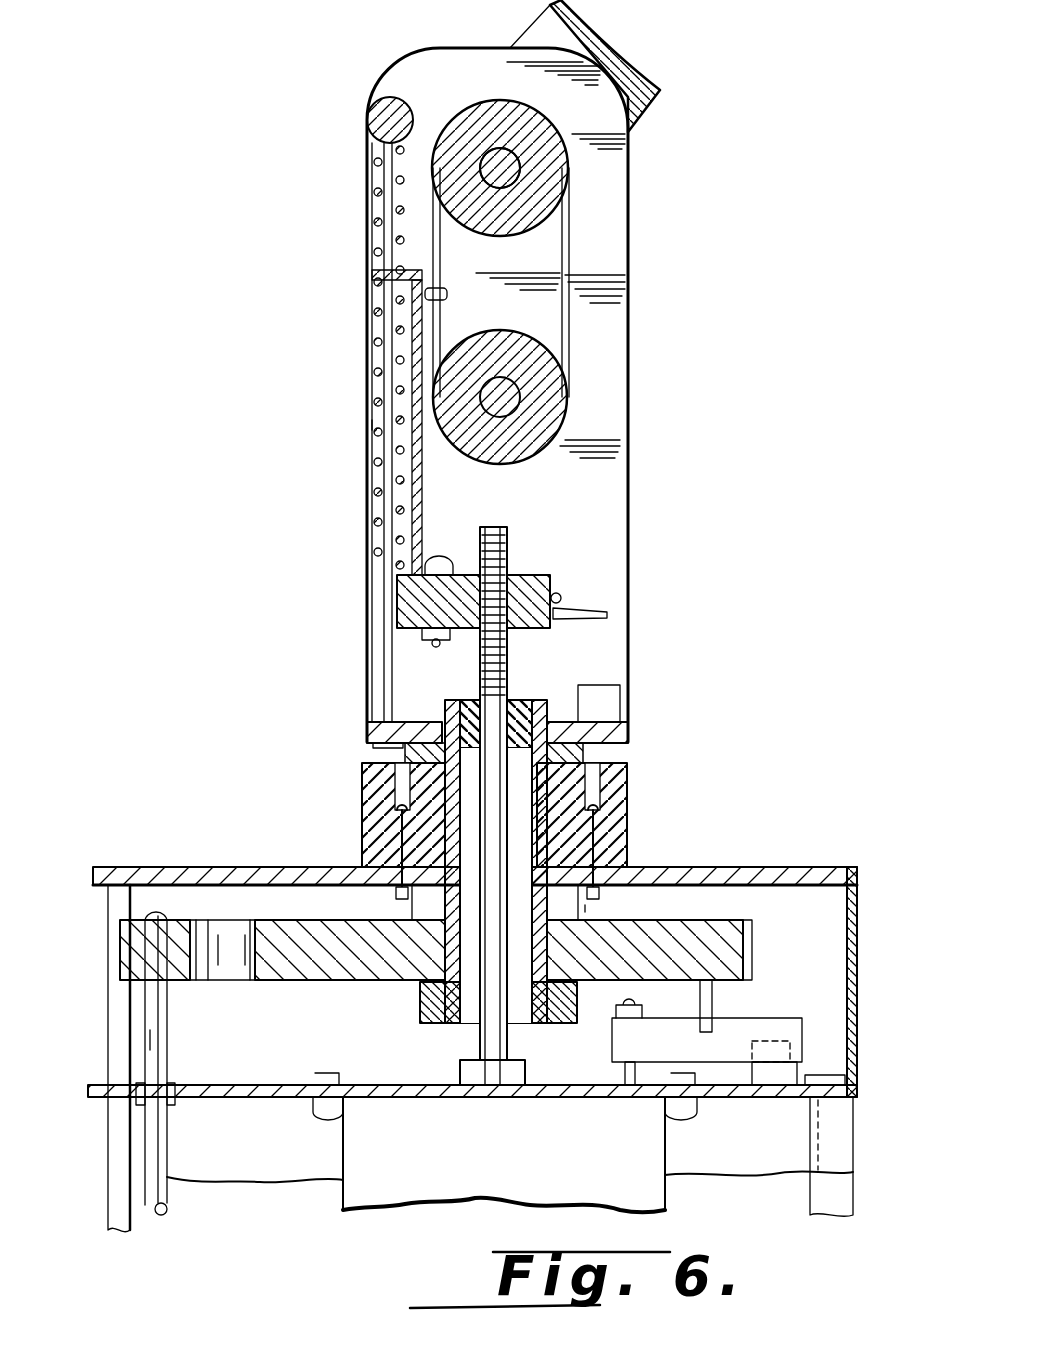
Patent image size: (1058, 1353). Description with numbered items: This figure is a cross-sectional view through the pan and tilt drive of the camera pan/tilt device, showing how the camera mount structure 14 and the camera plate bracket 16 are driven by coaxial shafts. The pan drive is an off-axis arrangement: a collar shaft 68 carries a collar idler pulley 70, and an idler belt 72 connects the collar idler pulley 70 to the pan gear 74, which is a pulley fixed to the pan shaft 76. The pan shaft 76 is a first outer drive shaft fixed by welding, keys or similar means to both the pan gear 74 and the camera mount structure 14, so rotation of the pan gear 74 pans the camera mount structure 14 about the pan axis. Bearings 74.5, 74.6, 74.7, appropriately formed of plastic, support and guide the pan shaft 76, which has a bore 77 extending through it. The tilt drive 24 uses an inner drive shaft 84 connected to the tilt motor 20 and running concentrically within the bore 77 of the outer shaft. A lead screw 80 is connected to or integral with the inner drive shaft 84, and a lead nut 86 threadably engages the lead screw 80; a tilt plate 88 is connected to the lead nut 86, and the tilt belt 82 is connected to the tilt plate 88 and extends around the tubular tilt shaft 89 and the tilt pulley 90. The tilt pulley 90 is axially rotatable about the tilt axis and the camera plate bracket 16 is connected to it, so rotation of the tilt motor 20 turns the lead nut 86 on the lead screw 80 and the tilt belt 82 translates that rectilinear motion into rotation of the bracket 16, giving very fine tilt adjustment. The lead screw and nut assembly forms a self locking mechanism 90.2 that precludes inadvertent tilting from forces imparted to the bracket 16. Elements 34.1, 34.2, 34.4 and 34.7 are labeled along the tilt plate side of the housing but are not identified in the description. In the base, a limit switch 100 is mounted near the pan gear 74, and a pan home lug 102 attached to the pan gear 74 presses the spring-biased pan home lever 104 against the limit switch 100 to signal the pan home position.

The camera mount structure 14 is at (630, 370).
The camera plate bracket 16 is at (645, 67).
The tilt motor 20 is at (522, 1158).
The tilt drive 24 is at (480, 678).
The rail 34.1 is at (378, 213).
The spring 34.2 is at (378, 420).
The bracket 34.4 is at (392, 352).
The roller 34.7 is at (385, 122).
The collar shaft 68 is at (152, 1040).
The collar idler pulley 70 is at (170, 912).
The idler belt 72 is at (236, 940).
The pan gear 74 is at (755, 893).
The bearing 74.5 is at (627, 803).
The bearing 74.6 is at (600, 750).
The bearing 74.7 is at (585, 910).
The pan shaft 76 is at (545, 680).
The bore 77 is at (457, 1023).
The lead screw 80 is at (507, 530).
The tilt belt 82 is at (568, 248).
The inner drive shaft 84 is at (530, 1040).
The lead nut 86 is at (525, 576).
The tilt plate 88 is at (415, 467).
The tubular tilt shaft 89 is at (500, 158).
The tilt pulley 90 is at (548, 166).
The self locking mechanism 90.2 is at (510, 556).
The limit switch 100 is at (595, 700).
The pan home lug 102 is at (712, 1005).
The pan home lever 104 is at (785, 1030).